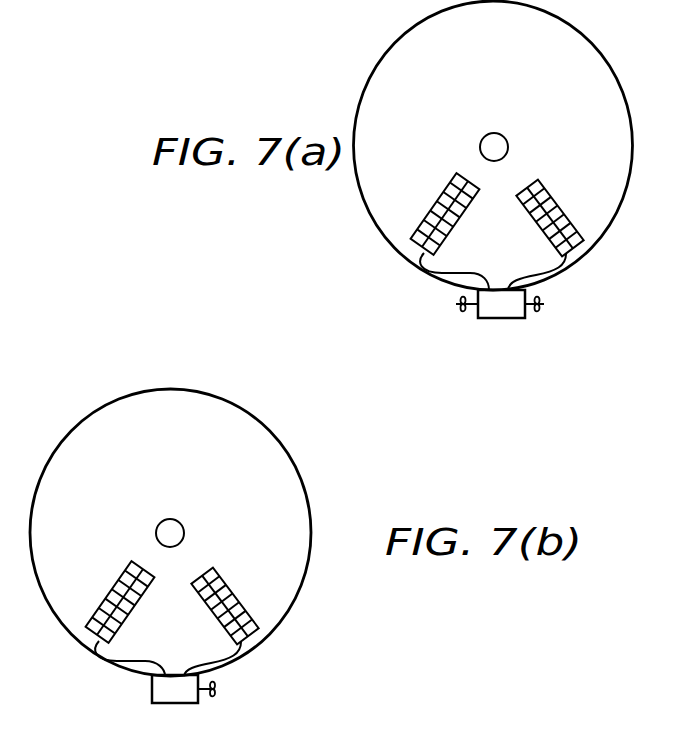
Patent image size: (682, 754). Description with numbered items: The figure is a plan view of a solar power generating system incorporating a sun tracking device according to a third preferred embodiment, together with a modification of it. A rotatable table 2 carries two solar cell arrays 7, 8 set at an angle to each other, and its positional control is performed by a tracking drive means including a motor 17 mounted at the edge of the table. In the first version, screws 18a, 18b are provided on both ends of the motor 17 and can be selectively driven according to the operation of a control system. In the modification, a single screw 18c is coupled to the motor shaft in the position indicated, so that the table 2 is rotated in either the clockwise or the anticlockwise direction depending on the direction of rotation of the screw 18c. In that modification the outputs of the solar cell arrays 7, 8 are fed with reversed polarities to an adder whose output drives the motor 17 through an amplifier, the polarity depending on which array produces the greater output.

The rotatable table 2 is at (629, 176).
In FIG. 7b, the rotatable table 2 is at (308, 563).
The solar cell array 7 is at (424, 217).
In FIG. 7b, the solar cell array 7 is at (102, 605).
The solar cell array 8 is at (566, 219).
In FIG. 7b, the solar cell array 8 is at (241, 606).
The motor 17 is at (507, 312).
In FIG. 7b, the motor 17 is at (168, 698).
The screw 18a is at (459, 303).
The screw 18b is at (543, 301).
In FIG. 7b, the screw 18c is at (216, 699).